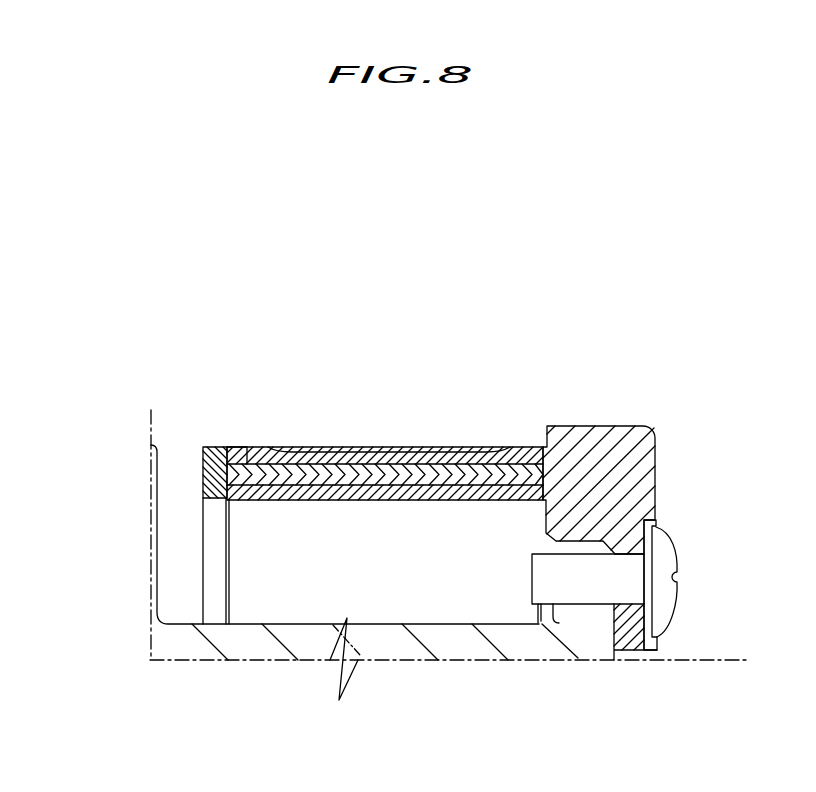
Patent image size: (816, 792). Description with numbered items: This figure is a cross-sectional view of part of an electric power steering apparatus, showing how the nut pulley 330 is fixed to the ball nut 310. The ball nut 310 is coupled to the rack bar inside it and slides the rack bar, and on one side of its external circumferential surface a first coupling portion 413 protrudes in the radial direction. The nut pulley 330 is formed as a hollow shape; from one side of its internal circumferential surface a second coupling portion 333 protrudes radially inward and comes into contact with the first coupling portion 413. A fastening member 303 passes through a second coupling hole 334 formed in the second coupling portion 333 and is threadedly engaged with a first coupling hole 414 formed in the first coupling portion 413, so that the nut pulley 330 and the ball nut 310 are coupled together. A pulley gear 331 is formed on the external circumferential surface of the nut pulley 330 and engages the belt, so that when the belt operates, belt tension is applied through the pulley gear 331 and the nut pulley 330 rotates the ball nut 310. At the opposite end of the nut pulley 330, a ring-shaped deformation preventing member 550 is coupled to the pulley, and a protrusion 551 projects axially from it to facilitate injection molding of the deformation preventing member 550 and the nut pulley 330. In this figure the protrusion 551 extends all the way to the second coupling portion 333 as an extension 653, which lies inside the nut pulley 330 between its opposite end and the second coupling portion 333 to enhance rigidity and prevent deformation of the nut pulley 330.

The ball nut 310 is at (178, 643).
The deformation preventing member 550 is at (211, 447).
The protrusion 551 is at (240, 468).
The nut pulley 330 is at (398, 452).
The pulley gear 331 is at (320, 452).
The extension 653 is at (527, 470).
The first coupling portion 413 is at (572, 541).
The second coupling portion 333 is at (652, 524).
The fastening member 303 is at (658, 551).
The first coupling hole 414 is at (572, 592).
The second coupling hole 334 is at (620, 590).